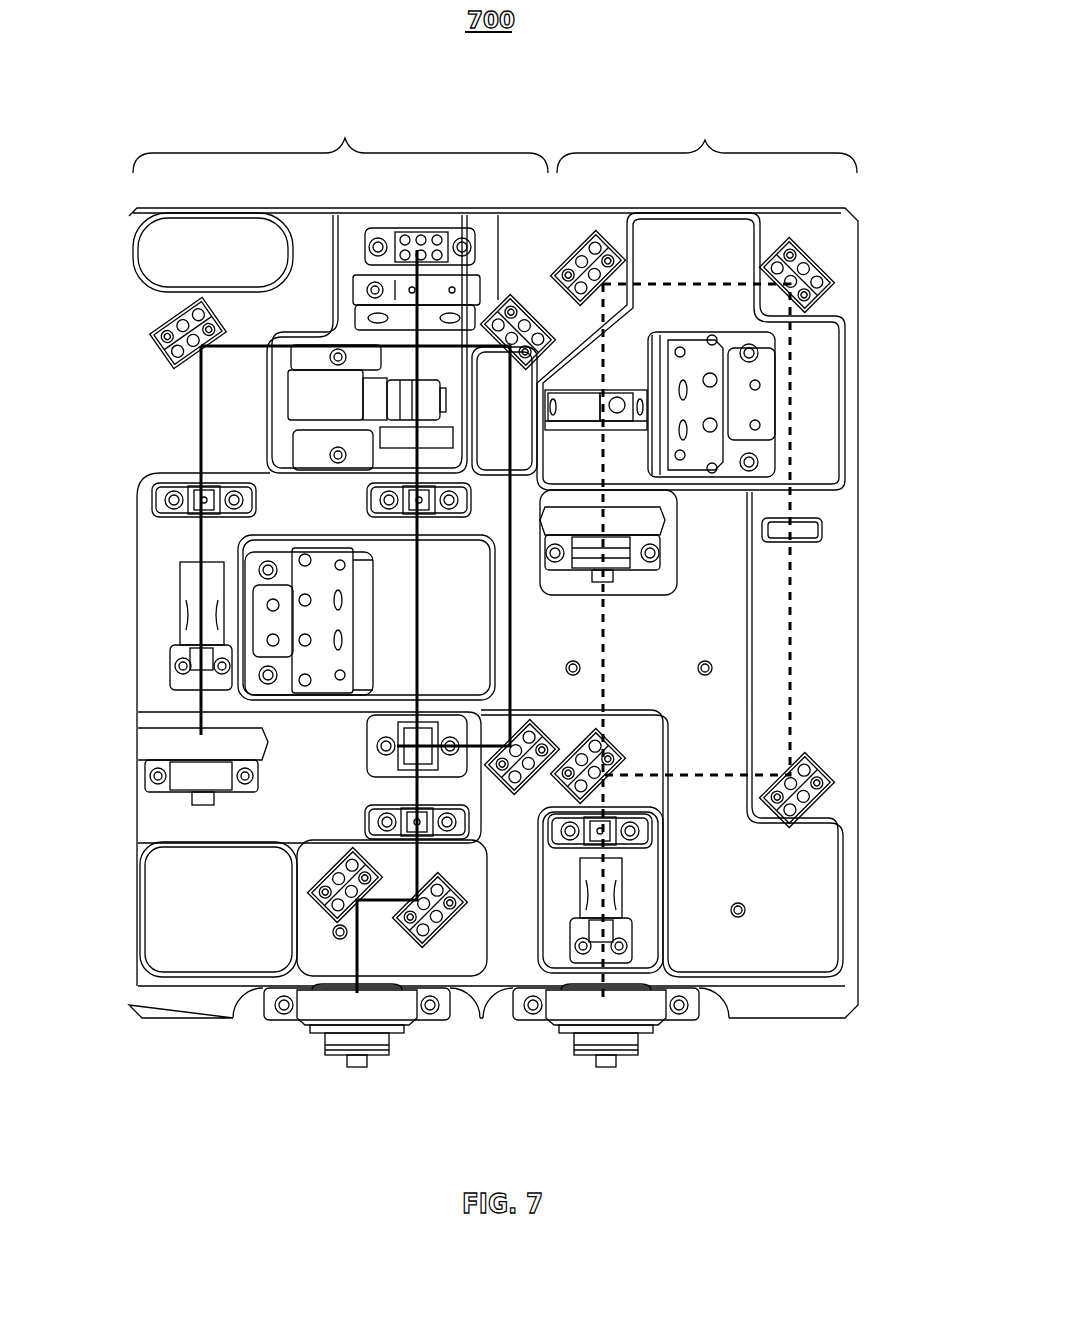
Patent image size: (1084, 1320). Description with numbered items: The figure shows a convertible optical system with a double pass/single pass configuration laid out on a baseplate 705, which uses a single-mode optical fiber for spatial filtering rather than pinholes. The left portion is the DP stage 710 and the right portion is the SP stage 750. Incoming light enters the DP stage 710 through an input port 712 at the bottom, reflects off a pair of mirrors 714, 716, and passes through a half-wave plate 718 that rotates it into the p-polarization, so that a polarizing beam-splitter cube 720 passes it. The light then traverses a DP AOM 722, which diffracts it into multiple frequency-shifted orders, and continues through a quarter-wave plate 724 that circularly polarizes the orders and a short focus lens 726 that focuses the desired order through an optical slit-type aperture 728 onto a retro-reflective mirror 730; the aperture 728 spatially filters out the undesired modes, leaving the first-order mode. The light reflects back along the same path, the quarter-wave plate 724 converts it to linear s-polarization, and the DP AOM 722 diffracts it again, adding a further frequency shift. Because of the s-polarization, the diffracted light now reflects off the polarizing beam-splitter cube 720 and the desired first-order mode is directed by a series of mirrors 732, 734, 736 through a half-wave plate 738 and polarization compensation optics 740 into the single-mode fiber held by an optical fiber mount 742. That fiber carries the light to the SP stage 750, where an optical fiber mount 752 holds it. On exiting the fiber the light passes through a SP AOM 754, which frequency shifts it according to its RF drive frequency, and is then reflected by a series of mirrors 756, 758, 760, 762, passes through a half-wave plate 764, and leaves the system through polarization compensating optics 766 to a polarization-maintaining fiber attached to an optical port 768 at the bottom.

The baseplate 705 is at (158, 462).
The DP stage 710 is at (345, 136).
The input port 712 is at (353, 1076).
The mirror 714 is at (302, 895).
The mirror 716 is at (432, 946).
The λ/2 plate 718 is at (350, 823).
The polarizing beam-splitter cube 720 is at (352, 742).
The DP AOM 722 is at (262, 568).
The λ/4 plate 724 is at (357, 495).
The short focus lens 726 is at (283, 395).
The optical slit-type aperture 728 is at (353, 248).
The retro-reflective mirror 730 is at (352, 293).
The mirror 732 is at (514, 800).
The mirror 734 is at (519, 290).
The mirror 736 is at (160, 332).
The λ/2 plate 738 is at (148, 500).
The polarization compensation optics 740 is at (172, 598).
The optical fiber mount 742 is at (130, 748).
The SP stage 750 is at (705, 138).
The optical fiber mount 752 is at (675, 540).
The SP AOM 754 is at (790, 404).
The mirror 756 is at (593, 232).
The mirror 758 is at (842, 278).
The mirror 760 is at (838, 783).
The mirror 762 is at (640, 750).
The λ/2 plate 764 is at (657, 832).
The polarization compensating optics 766 is at (632, 892).
The optical port 768 is at (602, 1070).